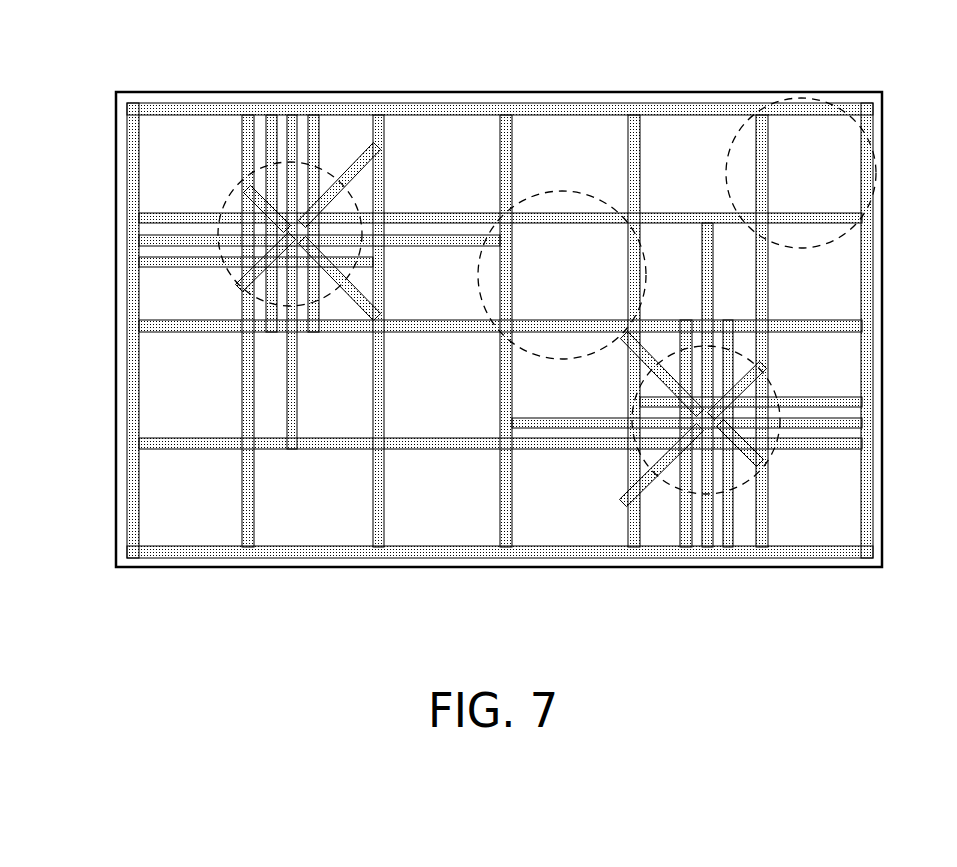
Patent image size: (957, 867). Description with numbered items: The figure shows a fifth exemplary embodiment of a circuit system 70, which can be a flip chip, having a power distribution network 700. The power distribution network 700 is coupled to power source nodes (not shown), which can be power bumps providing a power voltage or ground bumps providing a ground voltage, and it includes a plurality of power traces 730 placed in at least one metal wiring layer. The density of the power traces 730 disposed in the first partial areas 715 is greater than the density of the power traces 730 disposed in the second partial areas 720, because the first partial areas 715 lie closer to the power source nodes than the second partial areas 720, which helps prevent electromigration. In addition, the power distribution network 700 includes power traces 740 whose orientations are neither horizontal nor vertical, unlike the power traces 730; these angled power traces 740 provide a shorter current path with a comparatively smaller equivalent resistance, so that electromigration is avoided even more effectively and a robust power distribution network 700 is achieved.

The circuit system 70 is at (822, 93).
The power distribution network 700 is at (462, 147).
The first partial areas 715 is at (330, 296).
The second partial areas 720 is at (735, 143).
The power traces 730 is at (188, 450).
The power traces 740 is at (245, 197).